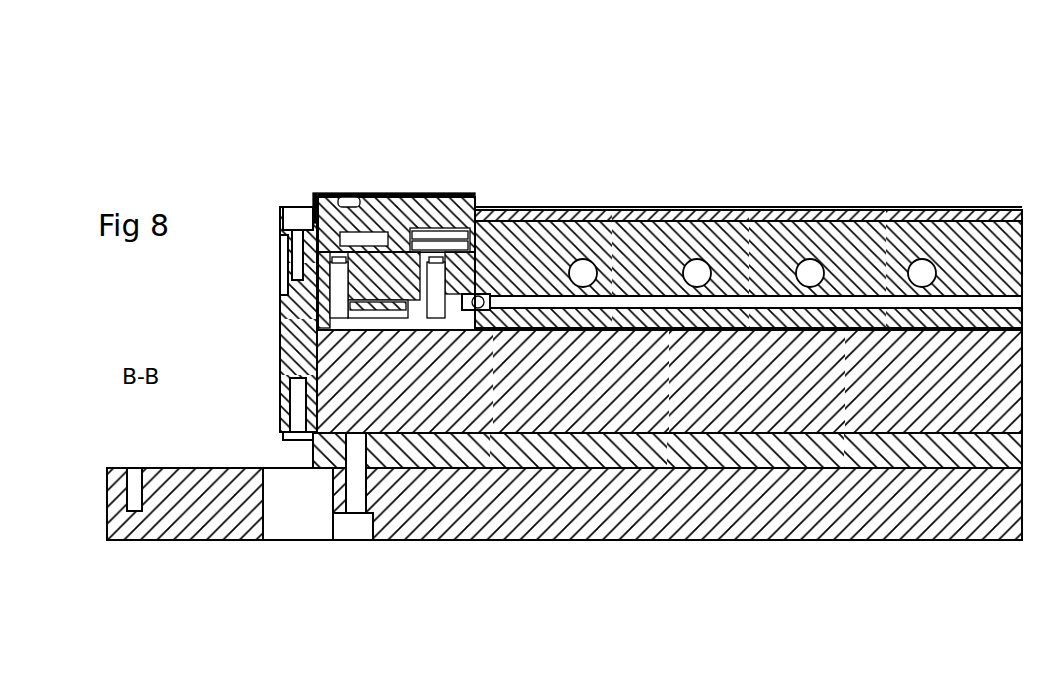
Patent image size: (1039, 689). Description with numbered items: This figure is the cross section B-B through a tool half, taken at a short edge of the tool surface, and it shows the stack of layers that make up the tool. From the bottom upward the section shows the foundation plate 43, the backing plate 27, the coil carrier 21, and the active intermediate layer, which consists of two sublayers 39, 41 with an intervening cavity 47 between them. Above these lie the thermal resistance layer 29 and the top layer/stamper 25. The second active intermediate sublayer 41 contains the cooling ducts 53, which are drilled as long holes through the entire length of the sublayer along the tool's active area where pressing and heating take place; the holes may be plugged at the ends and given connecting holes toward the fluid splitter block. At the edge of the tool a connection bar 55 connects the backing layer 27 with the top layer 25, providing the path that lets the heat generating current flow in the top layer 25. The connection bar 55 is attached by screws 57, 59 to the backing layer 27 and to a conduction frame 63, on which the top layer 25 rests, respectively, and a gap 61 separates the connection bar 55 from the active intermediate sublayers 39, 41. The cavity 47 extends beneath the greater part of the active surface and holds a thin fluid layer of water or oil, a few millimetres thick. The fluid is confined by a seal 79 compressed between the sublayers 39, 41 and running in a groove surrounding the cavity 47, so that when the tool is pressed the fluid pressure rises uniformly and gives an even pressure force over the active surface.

The coil carrier 21 is at (375, 395).
The top layer/stamper 25 is at (830, 208).
The backing plate 27 is at (318, 447).
The thermal resistance layer 29 is at (842, 208).
The first active intermediate sublayer 39 is at (747, 320).
The second active intermediate sublayer 41 is at (514, 258).
The foundation plate 43 is at (613, 510).
The cavity 47 is at (947, 302).
The cooling ducts 53 is at (580, 268).
The connection bar 55 is at (281, 308).
The screw 57 is at (282, 402).
The screw 59 is at (283, 290).
The gap 61 is at (281, 322).
The conduction frame 63 is at (410, 215).
The seal 79 is at (470, 298).